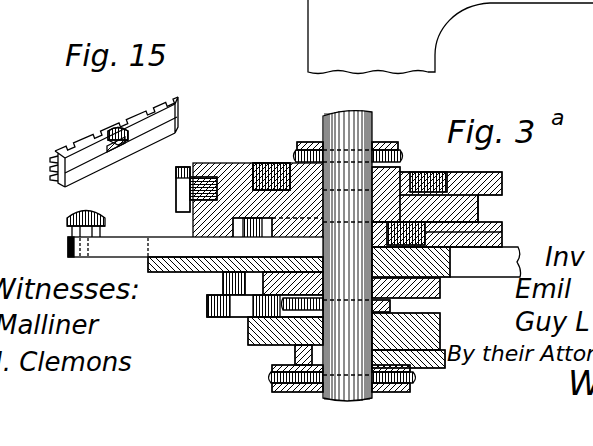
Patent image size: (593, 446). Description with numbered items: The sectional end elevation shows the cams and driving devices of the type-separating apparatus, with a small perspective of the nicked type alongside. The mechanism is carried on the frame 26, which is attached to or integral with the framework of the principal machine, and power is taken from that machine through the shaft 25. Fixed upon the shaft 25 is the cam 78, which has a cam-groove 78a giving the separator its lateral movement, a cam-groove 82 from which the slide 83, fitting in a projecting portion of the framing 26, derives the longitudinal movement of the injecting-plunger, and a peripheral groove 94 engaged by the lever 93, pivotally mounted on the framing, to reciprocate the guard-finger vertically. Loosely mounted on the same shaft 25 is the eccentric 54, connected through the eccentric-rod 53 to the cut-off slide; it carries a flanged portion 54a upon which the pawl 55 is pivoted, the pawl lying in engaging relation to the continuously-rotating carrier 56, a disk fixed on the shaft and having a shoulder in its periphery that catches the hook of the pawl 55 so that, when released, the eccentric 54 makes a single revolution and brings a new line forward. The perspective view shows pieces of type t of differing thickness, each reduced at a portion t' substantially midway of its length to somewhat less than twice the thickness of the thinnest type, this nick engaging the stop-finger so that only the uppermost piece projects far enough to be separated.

In FIG. 15, the type t is at (126, 142).
In FIG. 15, the reduced portion of type t' is at (118, 112).
In FIG. 3A, the shaft 25 is at (352, 133).
In FIG. 3A, the frame 26 is at (450, 138).
In FIG. 3A, the cam 78 is at (502, 179).
In FIG. 3A, the cam-groove 78a is at (267, 172).
In FIG. 3A, the groove 94 is at (490, 206).
In FIG. 3A, the cam-groove 82 is at (502, 228).
In FIG. 3A, the lever 93 is at (182, 190).
In FIG. 3A, the slide 83 is at (137, 243).
In FIG. 3A, the pawl 55 is at (240, 284).
In FIG. 3A, the carrier 56 is at (440, 292).
In FIG. 3A, the flanged portion of eccentric 54a is at (440, 320).
In FIG. 3A, the eccentric-rod 53 is at (293, 357).
In FIG. 3A, the eccentric 54 is at (413, 372).